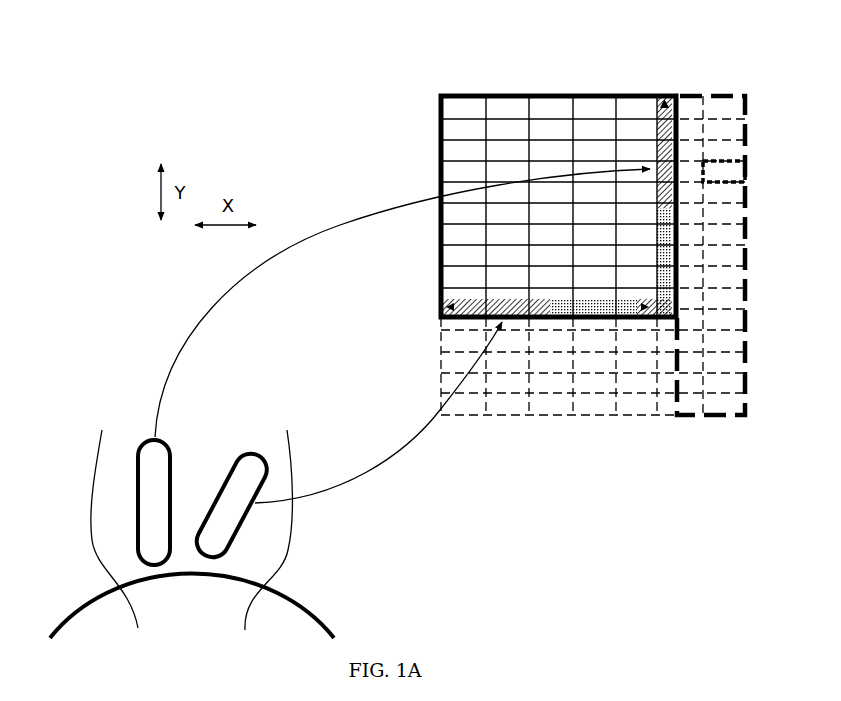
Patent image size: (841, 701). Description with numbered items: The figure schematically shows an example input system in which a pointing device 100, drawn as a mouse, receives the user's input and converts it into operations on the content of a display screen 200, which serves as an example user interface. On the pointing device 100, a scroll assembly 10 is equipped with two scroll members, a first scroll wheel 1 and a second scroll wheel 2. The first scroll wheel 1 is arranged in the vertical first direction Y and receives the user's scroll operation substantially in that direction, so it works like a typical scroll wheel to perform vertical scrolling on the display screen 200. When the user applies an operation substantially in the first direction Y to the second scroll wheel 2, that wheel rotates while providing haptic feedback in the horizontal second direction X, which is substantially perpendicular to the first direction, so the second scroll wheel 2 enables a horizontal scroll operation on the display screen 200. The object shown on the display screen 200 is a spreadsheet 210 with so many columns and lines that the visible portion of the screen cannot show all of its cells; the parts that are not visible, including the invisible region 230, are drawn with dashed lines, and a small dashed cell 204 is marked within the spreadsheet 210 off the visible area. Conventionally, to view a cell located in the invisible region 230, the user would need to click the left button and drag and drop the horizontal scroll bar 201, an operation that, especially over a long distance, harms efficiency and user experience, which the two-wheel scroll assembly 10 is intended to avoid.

The pointing device 100 is at (533, 78).
The scroll assembly 10 is at (130, 437).
The first scroll wheel 1 is at (167, 445).
The second scroll wheel 2 is at (243, 447).
The display screen 200 is at (557, 95).
The horizontal scroll bar 201 is at (445, 300).
The spreadsheet 210 is at (688, 85).
The target cell 204 is at (713, 183).
The invisible region 230 is at (727, 430).